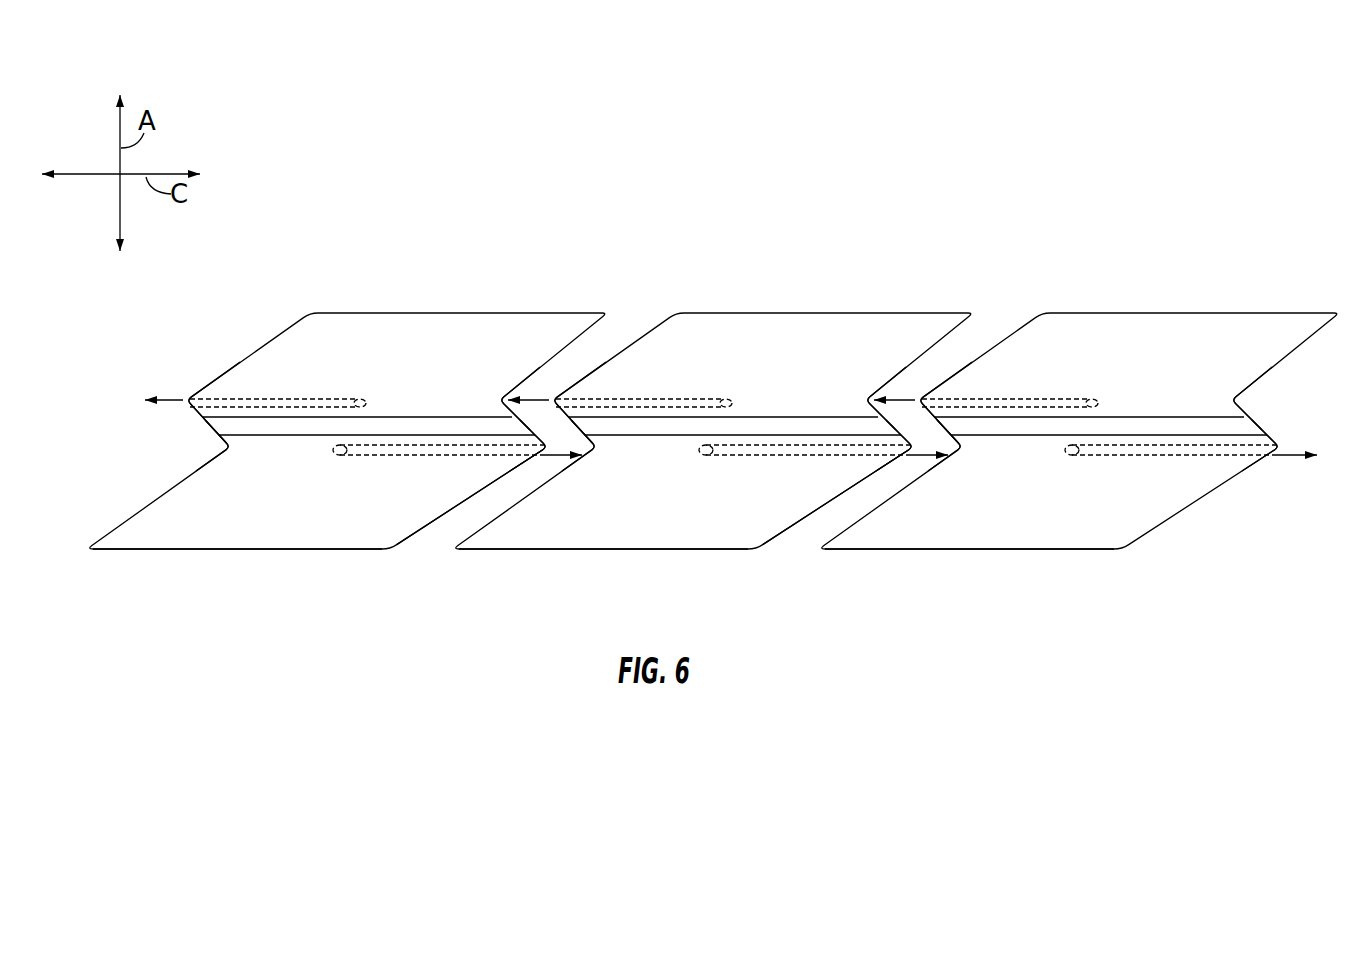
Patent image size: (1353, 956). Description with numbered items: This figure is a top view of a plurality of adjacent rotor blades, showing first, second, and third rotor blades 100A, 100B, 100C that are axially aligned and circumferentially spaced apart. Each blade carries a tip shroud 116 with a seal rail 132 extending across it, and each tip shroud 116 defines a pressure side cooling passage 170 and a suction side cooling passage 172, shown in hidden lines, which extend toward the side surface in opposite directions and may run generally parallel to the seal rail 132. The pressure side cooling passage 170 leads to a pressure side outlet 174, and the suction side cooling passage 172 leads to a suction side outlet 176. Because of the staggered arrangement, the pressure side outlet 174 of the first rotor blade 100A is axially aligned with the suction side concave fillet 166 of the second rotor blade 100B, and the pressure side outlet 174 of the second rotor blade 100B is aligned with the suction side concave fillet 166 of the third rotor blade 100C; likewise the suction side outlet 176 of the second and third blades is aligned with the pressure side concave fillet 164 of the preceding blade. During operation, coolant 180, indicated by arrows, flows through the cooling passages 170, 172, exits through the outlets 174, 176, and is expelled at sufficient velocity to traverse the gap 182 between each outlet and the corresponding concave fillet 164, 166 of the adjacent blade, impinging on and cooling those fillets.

The first rotor blade 100A is at (336, 233).
The second rotor blade 100B is at (704, 233).
The third rotor blade 100C is at (1072, 233).
The tip shroud 116 is at (210, 551).
The seal rail 132 is at (298, 425).
The pressure side concave fillet 164 is at (500, 398).
The suction side concave fillet 166 is at (232, 449).
The pressure side cooling passage 170 is at (381, 462).
The suction side cooling passage 172 is at (336, 392).
The pressure side outlet 174 is at (538, 460).
The suction side outlet 176 is at (182, 397).
The coolant 180 is at (168, 403).
The gap 182 is at (435, 544).